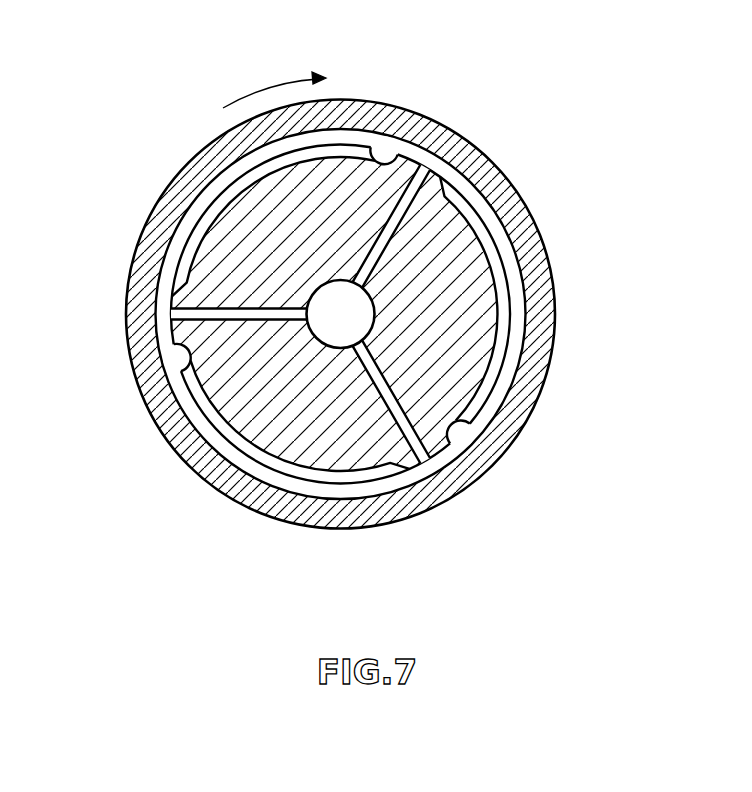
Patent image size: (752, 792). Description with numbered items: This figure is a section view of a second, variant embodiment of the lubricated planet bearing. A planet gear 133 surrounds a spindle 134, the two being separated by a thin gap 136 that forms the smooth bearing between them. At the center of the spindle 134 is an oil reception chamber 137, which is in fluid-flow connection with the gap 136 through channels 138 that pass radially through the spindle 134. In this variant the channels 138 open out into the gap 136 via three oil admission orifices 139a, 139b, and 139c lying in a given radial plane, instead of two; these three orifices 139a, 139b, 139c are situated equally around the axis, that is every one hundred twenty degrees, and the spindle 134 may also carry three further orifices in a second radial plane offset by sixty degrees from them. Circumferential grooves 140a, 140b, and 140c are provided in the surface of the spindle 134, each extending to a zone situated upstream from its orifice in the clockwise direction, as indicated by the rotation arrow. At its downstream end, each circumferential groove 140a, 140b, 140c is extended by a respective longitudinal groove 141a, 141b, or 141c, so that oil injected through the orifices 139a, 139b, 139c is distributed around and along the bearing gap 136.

The planet gear 133 is at (205, 160).
The spindle 134 is at (482, 343).
The gap 136 is at (172, 257).
The oil reception chamber 137 is at (328, 324).
The channels 138 is at (269, 314).
The oil admission orifice 139a is at (168, 312).
The oil admission orifice 139b is at (424, 165).
The oil admission orifice 139c is at (433, 470).
The circumferential groove 140a is at (216, 213).
The circumferential groove 140b is at (491, 259).
The circumferential groove 140c is at (321, 494).
The longitudinal groove 141a is at (379, 143).
The longitudinal groove 141b is at (466, 436).
The longitudinal groove 141c is at (179, 358).